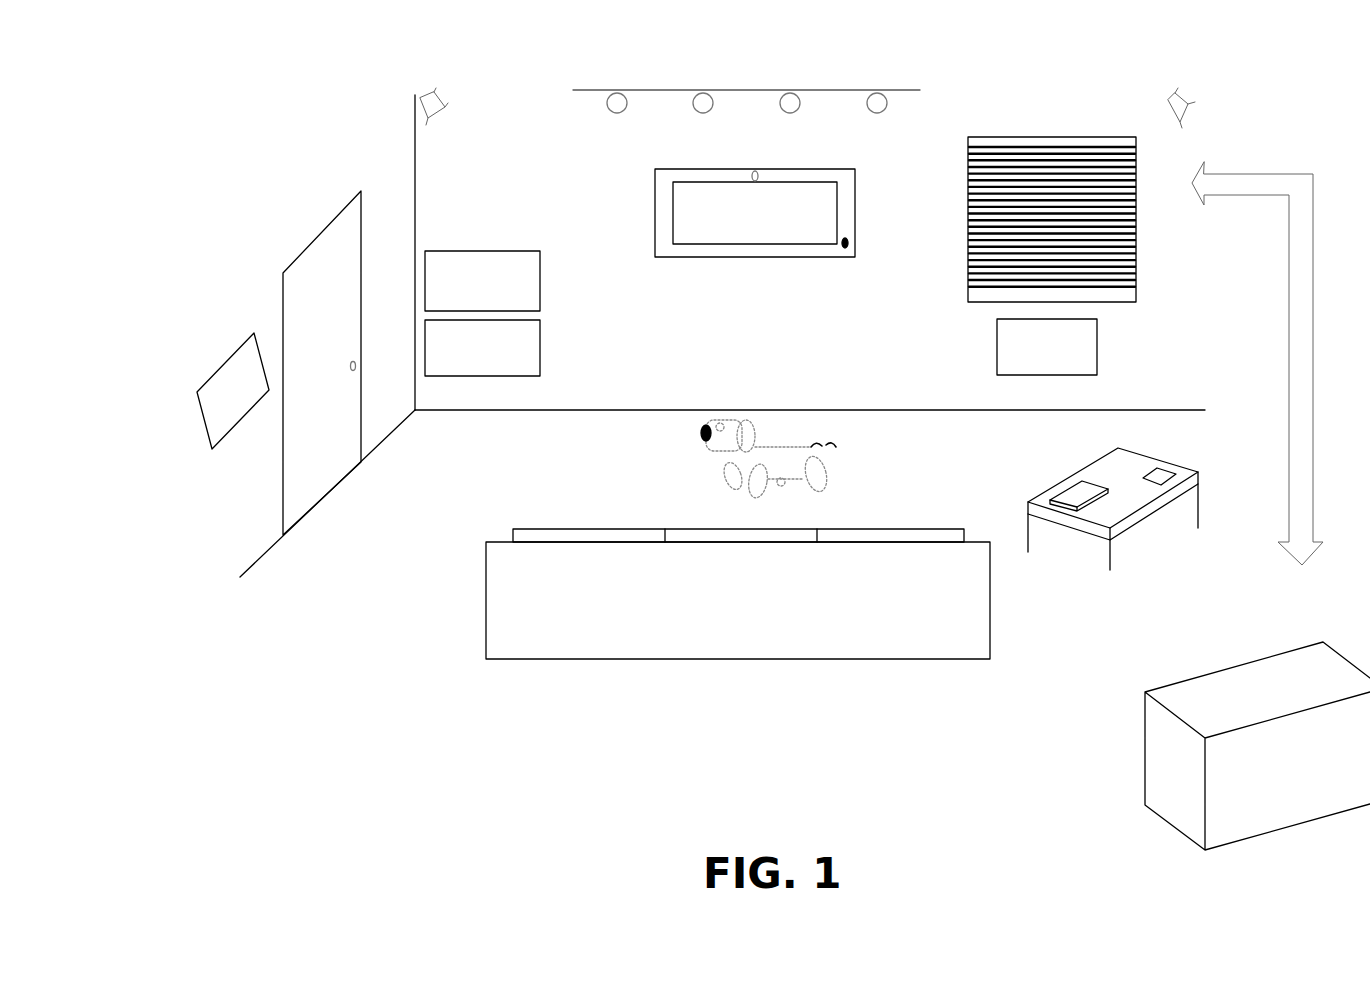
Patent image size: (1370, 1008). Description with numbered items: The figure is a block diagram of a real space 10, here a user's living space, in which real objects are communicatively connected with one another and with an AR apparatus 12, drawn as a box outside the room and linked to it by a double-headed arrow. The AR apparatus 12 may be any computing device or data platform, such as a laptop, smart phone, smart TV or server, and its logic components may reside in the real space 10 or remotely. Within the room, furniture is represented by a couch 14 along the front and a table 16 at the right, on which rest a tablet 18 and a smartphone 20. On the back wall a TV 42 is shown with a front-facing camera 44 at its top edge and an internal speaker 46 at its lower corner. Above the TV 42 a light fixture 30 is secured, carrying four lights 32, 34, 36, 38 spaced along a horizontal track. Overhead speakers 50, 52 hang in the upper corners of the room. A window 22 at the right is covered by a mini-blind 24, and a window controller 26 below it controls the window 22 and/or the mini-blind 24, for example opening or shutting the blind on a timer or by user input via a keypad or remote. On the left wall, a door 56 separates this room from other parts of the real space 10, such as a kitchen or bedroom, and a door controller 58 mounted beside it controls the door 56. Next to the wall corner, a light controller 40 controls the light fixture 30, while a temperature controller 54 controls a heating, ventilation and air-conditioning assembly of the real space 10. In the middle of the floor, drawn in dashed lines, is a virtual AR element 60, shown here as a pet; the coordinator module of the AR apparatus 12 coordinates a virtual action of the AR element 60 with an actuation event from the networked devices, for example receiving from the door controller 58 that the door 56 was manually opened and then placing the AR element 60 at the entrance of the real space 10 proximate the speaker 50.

The real space 10 is at (252, 133).
The AR apparatus 12 is at (1257, 746).
The couch 14 is at (486, 638).
The table 16 is at (1094, 458).
The tablet 18 is at (1065, 486).
The smartphone 20 is at (1152, 471).
The window 22 is at (1136, 218).
The mini-blind 24 is at (1112, 266).
The window controller 26 is at (1097, 345).
The light fixture 30 is at (653, 90).
The light 32 is at (877, 92).
The light 34 is at (792, 92).
The light 36 is at (703, 92).
The light 38 is at (614, 92).
The light controller 40 is at (540, 280).
The TV 42 is at (655, 203).
The front-facing camera 44 is at (757, 175).
The internal speaker 46 is at (850, 242).
The overhead speaker 50 is at (1182, 96).
The overhead speaker 52 is at (427, 95).
The temperature controller 54 is at (540, 343).
The door 56 is at (298, 258).
The door controller 58 is at (224, 360).
The AR element 60 is at (778, 450).